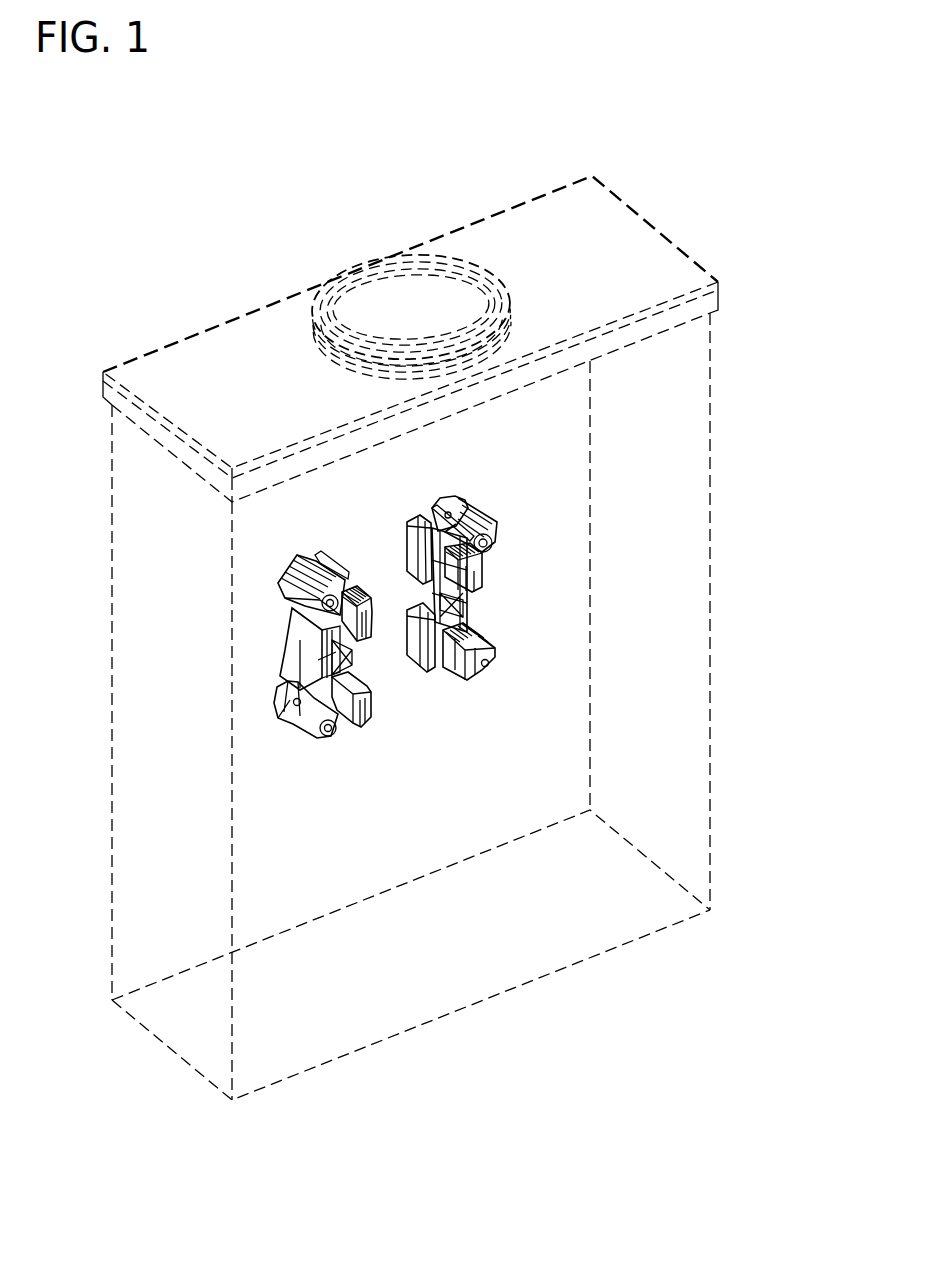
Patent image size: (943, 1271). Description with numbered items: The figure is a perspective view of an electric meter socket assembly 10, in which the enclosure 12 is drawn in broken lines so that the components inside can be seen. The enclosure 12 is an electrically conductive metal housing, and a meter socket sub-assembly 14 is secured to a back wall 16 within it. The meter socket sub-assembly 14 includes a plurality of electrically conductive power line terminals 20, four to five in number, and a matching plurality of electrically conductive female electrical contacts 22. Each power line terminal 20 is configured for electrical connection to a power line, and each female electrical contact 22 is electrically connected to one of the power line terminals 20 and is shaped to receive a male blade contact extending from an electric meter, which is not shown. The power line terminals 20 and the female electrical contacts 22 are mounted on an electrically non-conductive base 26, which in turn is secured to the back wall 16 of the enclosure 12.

The electric meter socket assembly 10 is at (730, 162).
The enclosure 12 is at (712, 612).
The meter socket sub-assembly 14 is at (453, 745).
The back wall 16 is at (138, 712).
The power line terminal 20 is at (283, 567).
The female electrical contact 22 is at (375, 613).
The base 26 is at (307, 645).